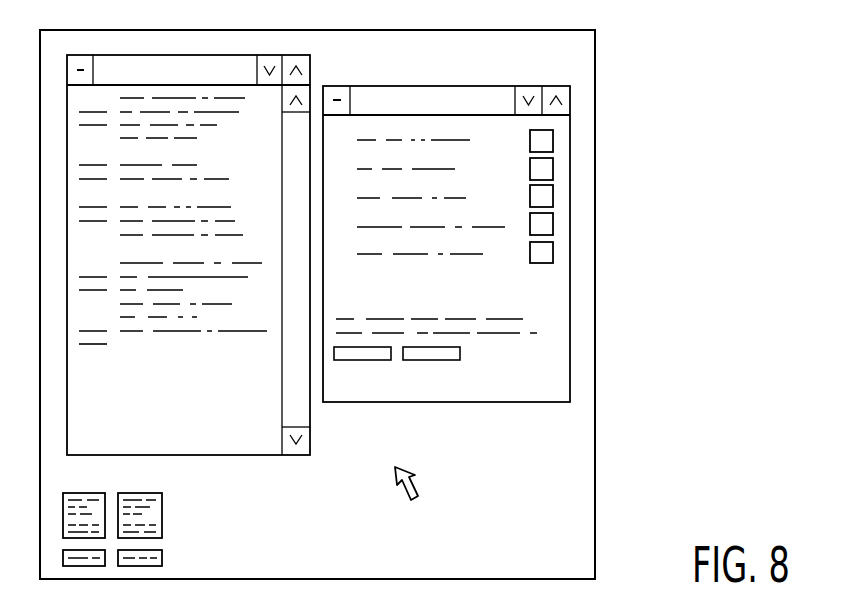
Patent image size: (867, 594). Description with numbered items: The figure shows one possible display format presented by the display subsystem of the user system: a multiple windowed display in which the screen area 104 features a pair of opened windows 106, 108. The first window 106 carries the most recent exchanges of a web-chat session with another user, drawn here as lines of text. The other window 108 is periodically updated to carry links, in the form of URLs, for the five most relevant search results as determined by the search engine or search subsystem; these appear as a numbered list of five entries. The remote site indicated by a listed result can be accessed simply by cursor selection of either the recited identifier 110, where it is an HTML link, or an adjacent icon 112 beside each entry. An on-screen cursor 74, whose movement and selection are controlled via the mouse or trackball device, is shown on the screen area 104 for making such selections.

The on-screen cursor 74 is at (419, 490).
The screen area 104 is at (587, 495).
The first window 106 is at (243, 430).
The second window 108 is at (543, 387).
The recited identifier 110 is at (372, 253).
The icon 112 is at (547, 224).